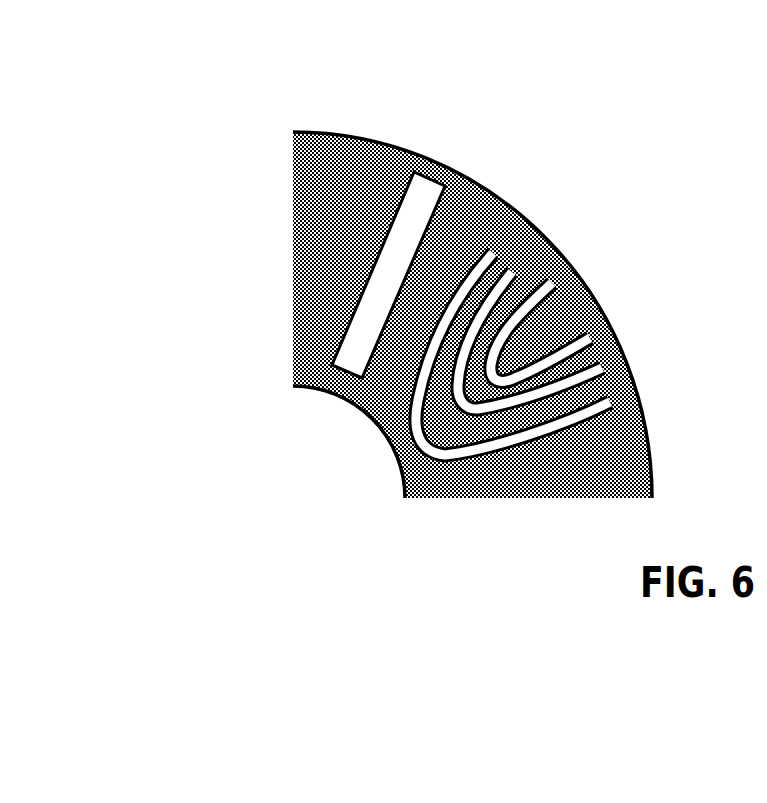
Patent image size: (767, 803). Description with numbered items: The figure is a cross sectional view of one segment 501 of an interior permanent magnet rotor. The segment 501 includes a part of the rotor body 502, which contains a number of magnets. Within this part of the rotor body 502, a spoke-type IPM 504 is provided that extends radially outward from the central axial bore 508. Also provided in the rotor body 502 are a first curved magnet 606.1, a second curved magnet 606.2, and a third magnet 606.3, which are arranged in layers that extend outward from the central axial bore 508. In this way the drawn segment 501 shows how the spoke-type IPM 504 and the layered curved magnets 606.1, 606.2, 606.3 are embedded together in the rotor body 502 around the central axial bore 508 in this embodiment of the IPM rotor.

The segment 501 is at (202, 213).
The rotor body 502 is at (307, 187).
The spoke-type IPM 504 is at (368, 263).
The first curved magnet 606.1 is at (500, 410).
The second curved magnet 606.2 is at (400, 414).
The third magnet 606.3 is at (595, 333).
The central axial bore 508 is at (307, 493).